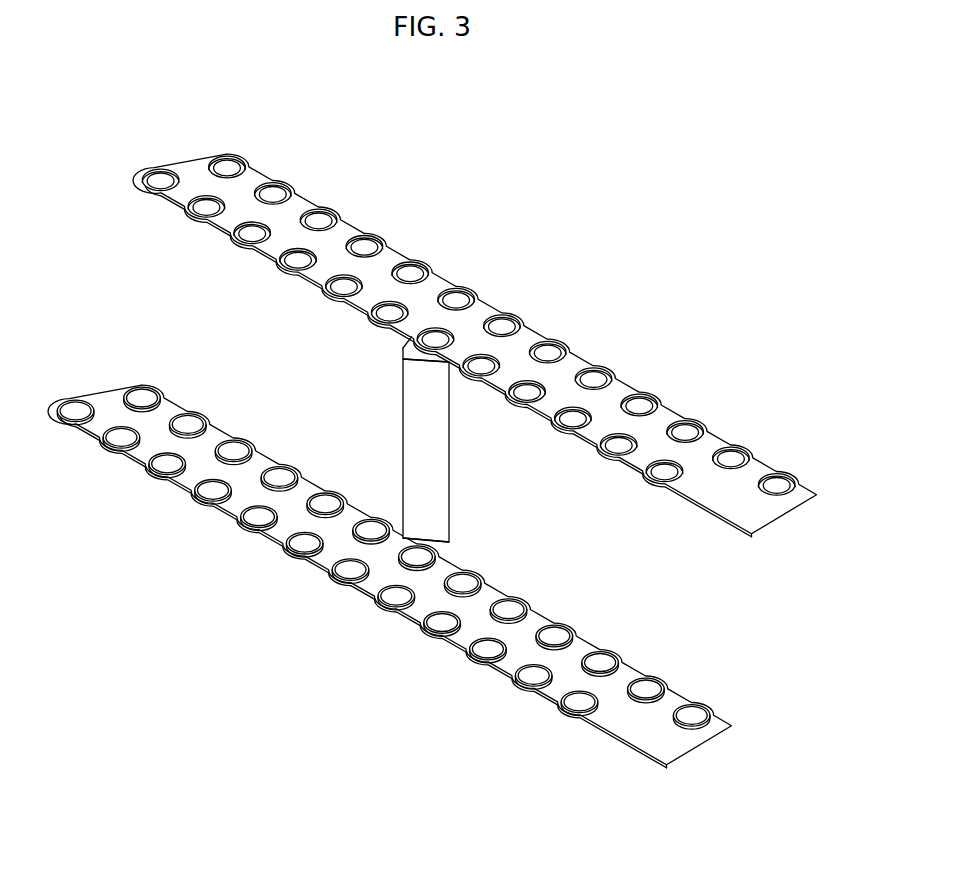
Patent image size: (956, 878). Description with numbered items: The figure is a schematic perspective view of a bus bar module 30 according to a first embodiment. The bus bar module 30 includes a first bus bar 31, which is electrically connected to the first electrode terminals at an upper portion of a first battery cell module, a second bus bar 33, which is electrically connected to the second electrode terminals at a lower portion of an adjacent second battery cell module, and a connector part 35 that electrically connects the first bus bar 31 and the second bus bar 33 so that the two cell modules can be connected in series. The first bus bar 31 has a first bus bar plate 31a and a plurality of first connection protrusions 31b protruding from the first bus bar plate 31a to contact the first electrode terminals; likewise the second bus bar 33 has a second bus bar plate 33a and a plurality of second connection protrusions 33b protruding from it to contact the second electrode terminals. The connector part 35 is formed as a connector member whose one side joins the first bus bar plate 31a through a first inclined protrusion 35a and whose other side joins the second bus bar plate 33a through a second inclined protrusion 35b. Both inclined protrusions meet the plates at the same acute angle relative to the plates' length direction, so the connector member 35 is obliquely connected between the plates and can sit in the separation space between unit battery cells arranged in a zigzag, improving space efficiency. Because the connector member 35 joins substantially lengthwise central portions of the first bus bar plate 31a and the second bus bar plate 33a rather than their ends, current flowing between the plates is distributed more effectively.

The bus bar module 30 is at (432, 461).
The first bus bar 31 is at (474, 345).
The first bus bar plate 31a is at (388, 265).
The first connection protrusions 31b is at (367, 247).
The second bus bar 33 is at (389, 576).
The second bus bar plate 33a is at (280, 535).
The second connection protrusions 33b is at (255, 518).
The connector part 35 is at (465, 412).
The first inclined protrusion 35a is at (431, 360).
The second inclined protrusion 35b is at (440, 549).